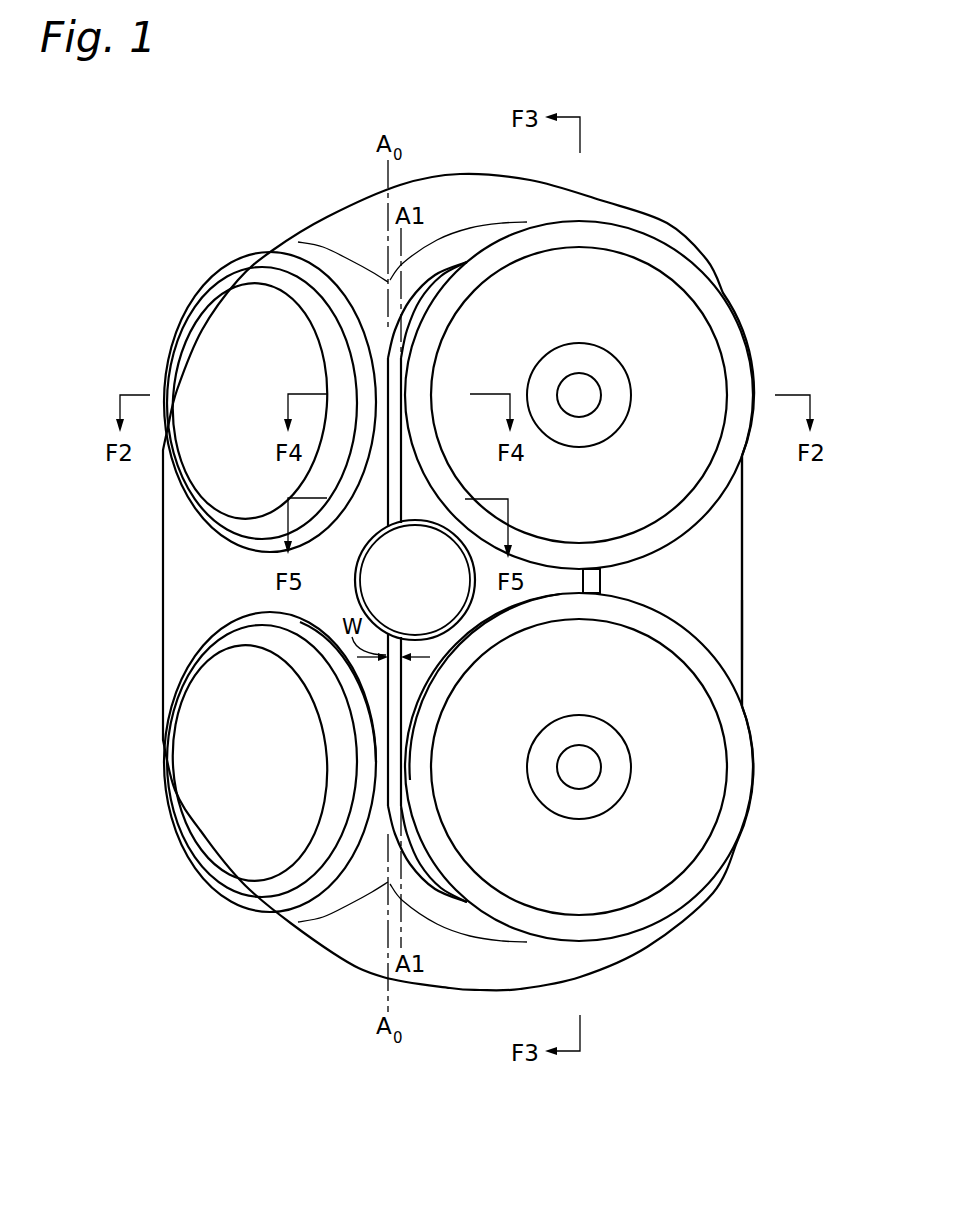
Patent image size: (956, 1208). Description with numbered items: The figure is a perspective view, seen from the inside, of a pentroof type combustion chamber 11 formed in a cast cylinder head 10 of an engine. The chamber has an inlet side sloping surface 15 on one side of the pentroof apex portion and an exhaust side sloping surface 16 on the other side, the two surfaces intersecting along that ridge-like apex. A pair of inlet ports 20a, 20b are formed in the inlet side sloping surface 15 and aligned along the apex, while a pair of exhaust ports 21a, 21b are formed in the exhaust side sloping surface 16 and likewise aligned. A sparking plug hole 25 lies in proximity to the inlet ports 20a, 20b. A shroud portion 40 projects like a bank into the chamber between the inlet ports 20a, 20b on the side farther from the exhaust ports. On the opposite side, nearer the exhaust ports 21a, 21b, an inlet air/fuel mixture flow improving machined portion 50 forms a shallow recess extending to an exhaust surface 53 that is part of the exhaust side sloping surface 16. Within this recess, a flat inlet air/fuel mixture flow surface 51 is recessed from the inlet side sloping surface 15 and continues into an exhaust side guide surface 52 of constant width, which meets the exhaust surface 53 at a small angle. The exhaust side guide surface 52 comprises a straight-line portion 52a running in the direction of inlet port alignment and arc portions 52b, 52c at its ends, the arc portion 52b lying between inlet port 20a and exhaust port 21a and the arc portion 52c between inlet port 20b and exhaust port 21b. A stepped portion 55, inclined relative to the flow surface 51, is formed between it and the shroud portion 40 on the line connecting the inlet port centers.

The cylinder head 10 is at (680, 211).
The pentroof type combustion chamber 11 is at (728, 537).
The inlet side sloping surface 15 is at (669, 586).
The exhaust side sloping surface 16 is at (214, 597).
The inlet port 20a is at (698, 330).
The inlet port 20b is at (678, 843).
The exhaust port 21a is at (222, 337).
The exhaust port 21b is at (227, 823).
The sparking plug hole 25 is at (368, 595).
The shroud portion 40 is at (723, 627).
The inlet air/fuel mixture flow improving machined portion 50 is at (451, 582).
The inlet air/fuel mixture flow surface 51 is at (475, 615).
The exhaust side guide surface 52 is at (451, 582).
The straight-line portion 52a is at (397, 450).
The arc portion 52b is at (422, 303).
The arc portion 52c is at (412, 855).
The exhaust surface 53 is at (368, 678).
The stepped portion 55 is at (584, 580).